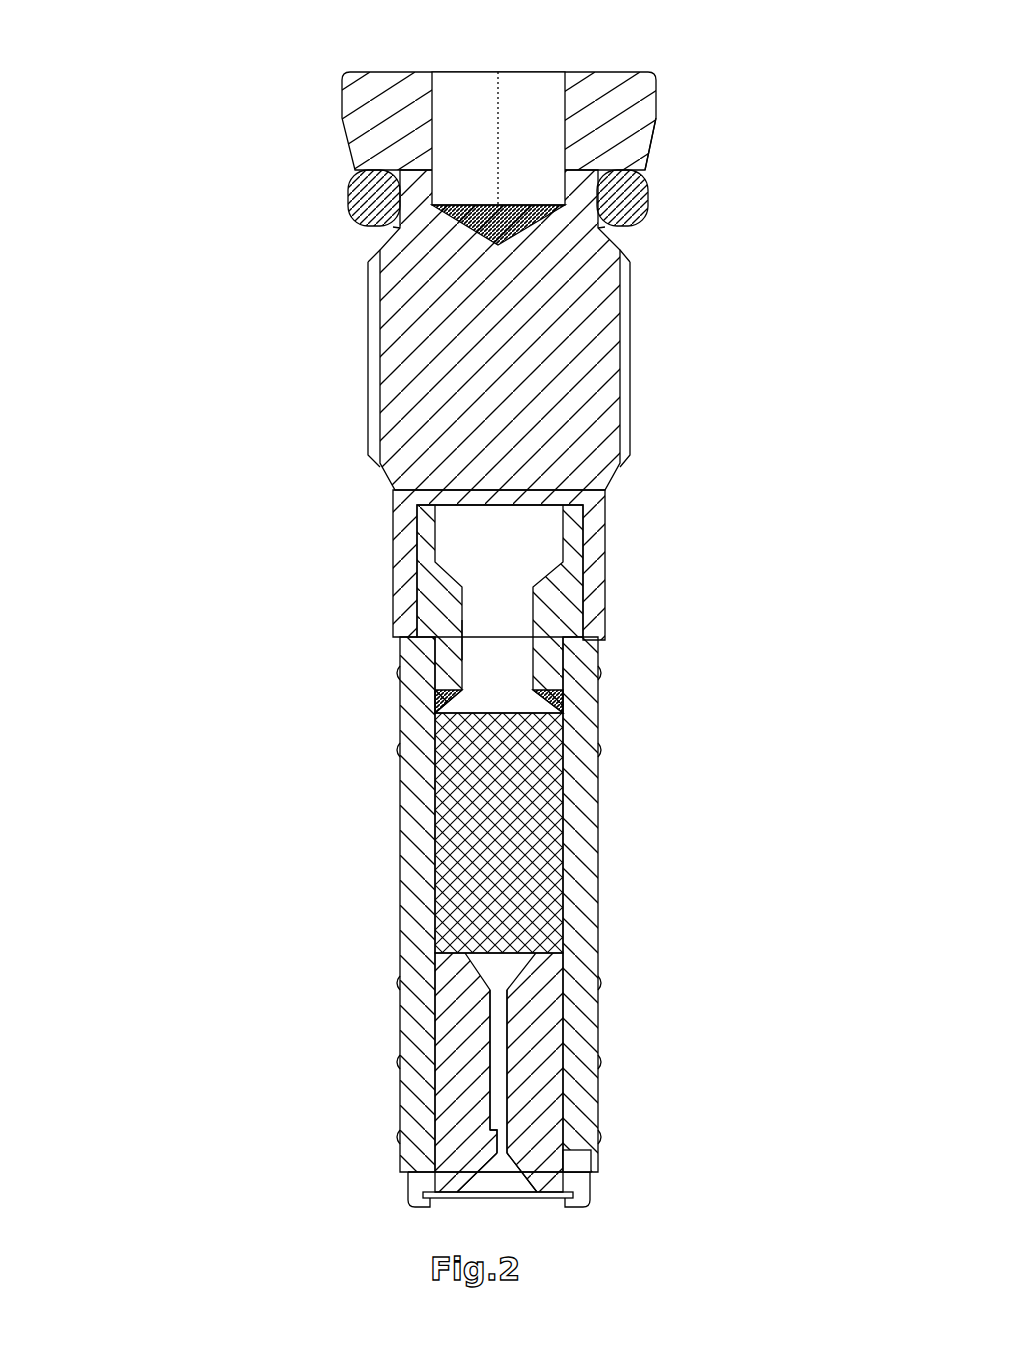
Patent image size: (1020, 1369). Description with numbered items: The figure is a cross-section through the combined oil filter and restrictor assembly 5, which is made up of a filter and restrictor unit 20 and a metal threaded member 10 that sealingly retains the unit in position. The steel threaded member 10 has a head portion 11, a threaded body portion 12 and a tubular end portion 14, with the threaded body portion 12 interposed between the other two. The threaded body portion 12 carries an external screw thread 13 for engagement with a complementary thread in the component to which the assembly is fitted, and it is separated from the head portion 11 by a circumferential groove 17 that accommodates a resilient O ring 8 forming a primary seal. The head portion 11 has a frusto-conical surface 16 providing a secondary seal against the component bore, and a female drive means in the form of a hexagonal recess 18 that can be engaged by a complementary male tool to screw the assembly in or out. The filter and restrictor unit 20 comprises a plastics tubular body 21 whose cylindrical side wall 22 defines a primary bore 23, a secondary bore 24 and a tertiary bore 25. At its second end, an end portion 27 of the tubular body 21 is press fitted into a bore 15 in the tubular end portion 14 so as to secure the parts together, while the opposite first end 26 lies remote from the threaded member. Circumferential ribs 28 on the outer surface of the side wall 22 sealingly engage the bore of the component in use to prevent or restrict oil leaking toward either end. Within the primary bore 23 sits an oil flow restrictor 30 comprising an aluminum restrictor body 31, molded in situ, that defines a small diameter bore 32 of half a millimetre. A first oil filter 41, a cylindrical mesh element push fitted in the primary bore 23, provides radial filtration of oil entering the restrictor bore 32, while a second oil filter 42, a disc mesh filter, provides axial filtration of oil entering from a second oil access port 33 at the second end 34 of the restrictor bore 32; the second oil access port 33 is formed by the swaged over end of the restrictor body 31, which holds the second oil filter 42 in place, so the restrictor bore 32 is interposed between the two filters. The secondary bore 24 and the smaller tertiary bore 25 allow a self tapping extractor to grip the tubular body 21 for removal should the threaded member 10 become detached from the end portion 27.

The combined oil filter and restrictor assembly 5 is at (196, 192).
The O ring 8 is at (648, 198).
The metal threaded member 10 is at (640, 388).
The head portion 11 is at (600, 93).
The threaded body portion 12 is at (548, 282).
The external screw thread 13 is at (632, 330).
The tubular end portion 14 is at (605, 552).
The bore 15 is at (565, 590).
The frusto-conical surface 16 is at (652, 148).
The circumferential groove 17 is at (607, 233).
The hexagonal recess 18 is at (432, 108).
The filter and restrictor unit 20 is at (612, 797).
The tubular body 21 is at (598, 873).
The cylindrical side wall 22 is at (580, 952).
The primary bore 23 is at (548, 738).
The secondary bore 24 is at (455, 525).
The tertiary bore 25 is at (465, 653).
The first end 26 is at (591, 1172).
The end portion 27 is at (435, 597).
The circumferential ribs 28 is at (397, 750).
The oil flow restrictor 30 is at (575, 1049).
The restrictor body 31 is at (546, 995).
The small diameter bore 32 is at (478, 957).
The second oil access port 33 is at (423, 1207).
The second end 34 is at (497, 1130).
The first oil filter 41 is at (510, 838).
The second oil filter 42 is at (510, 1195).